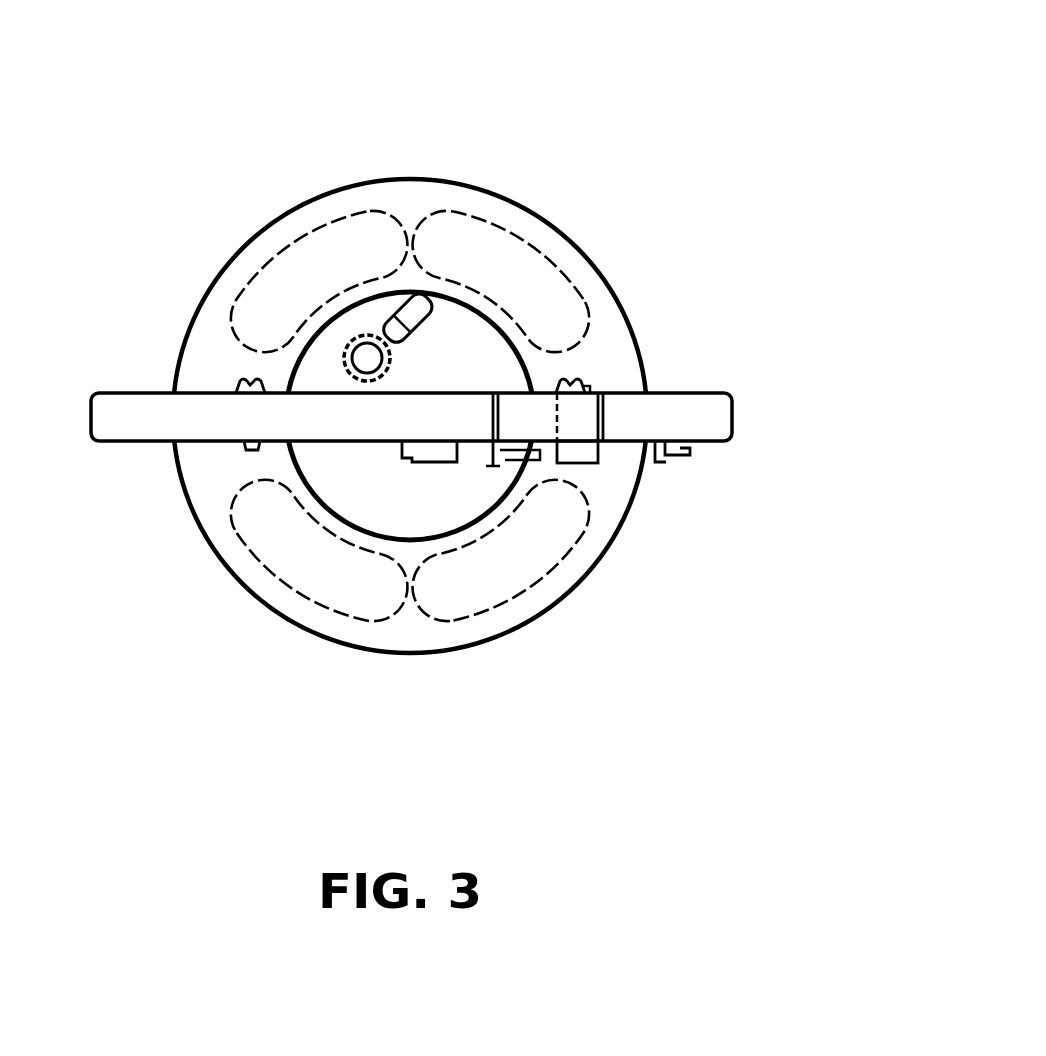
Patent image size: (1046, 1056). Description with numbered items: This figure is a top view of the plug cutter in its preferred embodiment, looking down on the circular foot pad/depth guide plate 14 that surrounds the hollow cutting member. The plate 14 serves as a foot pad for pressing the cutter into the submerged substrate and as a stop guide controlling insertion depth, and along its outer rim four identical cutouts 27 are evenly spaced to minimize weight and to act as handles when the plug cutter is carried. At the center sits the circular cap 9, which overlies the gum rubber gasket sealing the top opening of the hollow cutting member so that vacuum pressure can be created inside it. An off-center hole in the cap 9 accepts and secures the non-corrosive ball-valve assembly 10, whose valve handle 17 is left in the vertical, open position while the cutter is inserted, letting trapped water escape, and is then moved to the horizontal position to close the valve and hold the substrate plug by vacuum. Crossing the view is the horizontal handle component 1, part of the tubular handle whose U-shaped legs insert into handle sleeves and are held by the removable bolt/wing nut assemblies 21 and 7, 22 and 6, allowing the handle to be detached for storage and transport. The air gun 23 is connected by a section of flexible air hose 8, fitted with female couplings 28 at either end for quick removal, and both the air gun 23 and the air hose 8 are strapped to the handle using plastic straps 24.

The handle component 1 is at (740, 417).
The bolt/wing nut assembly 6 is at (239, 380).
The bolt/wing nut assembly 7 is at (607, 373).
The flexible air hose 8 is at (441, 462).
The cap 9 is at (318, 372).
The ball-valve assembly 10 is at (370, 352).
The foot pad/depth guide plate 14 is at (587, 247).
The valve handle 17 is at (422, 308).
The bolt/wing nut assembly 21 is at (586, 384).
The bolt/wing nut assembly 22 is at (243, 454).
The air gun 23 is at (668, 451).
The plastic straps 24 is at (517, 434).
The cutouts 27 is at (303, 556).
The female couplings 28 is at (488, 462).